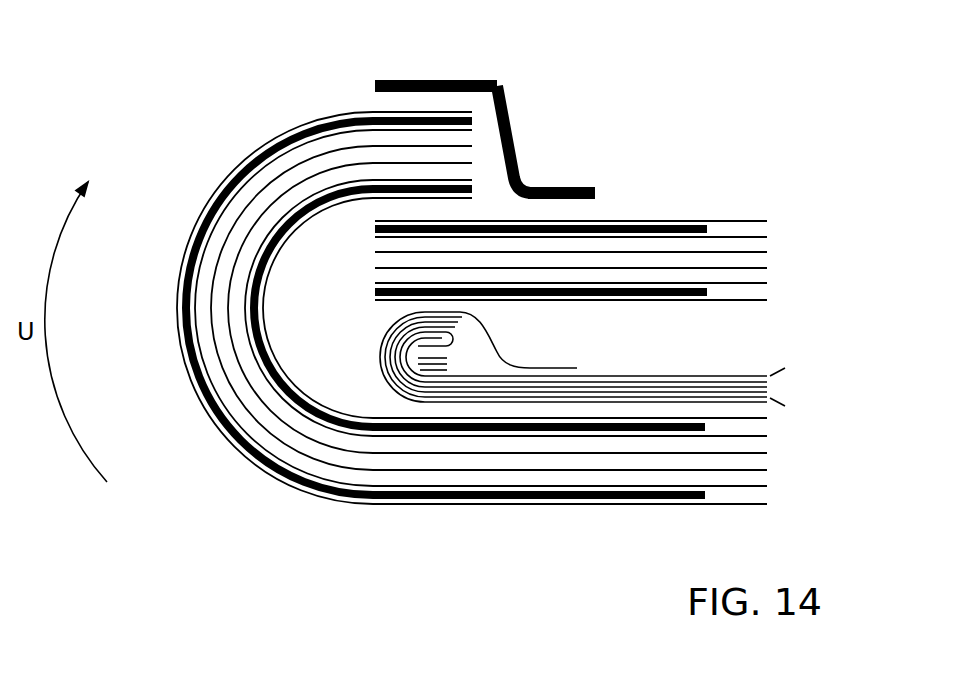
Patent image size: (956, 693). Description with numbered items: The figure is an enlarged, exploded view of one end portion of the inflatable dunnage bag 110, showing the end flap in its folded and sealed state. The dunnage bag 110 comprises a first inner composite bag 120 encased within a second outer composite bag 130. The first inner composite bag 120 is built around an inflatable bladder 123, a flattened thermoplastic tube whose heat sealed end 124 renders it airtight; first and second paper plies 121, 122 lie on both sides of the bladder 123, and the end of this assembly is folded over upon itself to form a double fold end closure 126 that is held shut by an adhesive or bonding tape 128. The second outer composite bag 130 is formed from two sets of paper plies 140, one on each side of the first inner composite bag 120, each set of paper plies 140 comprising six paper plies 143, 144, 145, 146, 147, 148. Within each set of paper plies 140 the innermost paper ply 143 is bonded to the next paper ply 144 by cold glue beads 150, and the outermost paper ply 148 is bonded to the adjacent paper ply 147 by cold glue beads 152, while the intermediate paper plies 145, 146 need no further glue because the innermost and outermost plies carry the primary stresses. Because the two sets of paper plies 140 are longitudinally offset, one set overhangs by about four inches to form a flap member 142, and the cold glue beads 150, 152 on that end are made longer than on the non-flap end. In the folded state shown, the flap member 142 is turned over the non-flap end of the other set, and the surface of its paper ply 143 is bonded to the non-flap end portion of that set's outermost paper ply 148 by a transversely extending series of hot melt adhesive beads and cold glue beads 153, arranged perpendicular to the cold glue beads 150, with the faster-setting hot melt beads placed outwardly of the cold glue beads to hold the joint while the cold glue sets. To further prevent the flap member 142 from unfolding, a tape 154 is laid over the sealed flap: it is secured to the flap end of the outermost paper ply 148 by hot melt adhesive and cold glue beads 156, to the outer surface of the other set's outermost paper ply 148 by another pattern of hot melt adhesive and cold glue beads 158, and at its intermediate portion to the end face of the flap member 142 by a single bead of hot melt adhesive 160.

The inflatable dunnage bag 110 is at (825, 243).
The first inner composite bag 120 is at (772, 336).
The first paper ply 121 is at (650, 382).
The second paper ply 122 is at (613, 377).
The inflatable bladder 123 is at (700, 387).
The heat sealed end 124 is at (420, 322).
The double fold end closure 126 is at (418, 352).
The adhesive or bonding tape 128 is at (505, 362).
The second outer composite bag 130 is at (168, 358).
The set of paper plies 140 is at (690, 203).
The flap member 142 is at (242, 226).
The innermost paper ply 143 is at (390, 414).
The paper ply 144 is at (375, 288).
The paper ply 145 is at (603, 265).
The paper ply 146 is at (656, 250).
The paper ply 147 is at (728, 237).
The outermost paper ply 148 is at (750, 221).
The cold glue beads 150 is at (562, 294).
The cold glue beads 152 is at (661, 224).
The series of hot melt adhesive beads and cold glue beads 153 is at (372, 208).
The tape 154 is at (500, 82).
The hot melt adhesive and cold glue beads 156 is at (429, 79).
The hot melt adhesive and cold glue beads 158 is at (543, 185).
The single bead of hot melt adhesive 160 is at (507, 112).